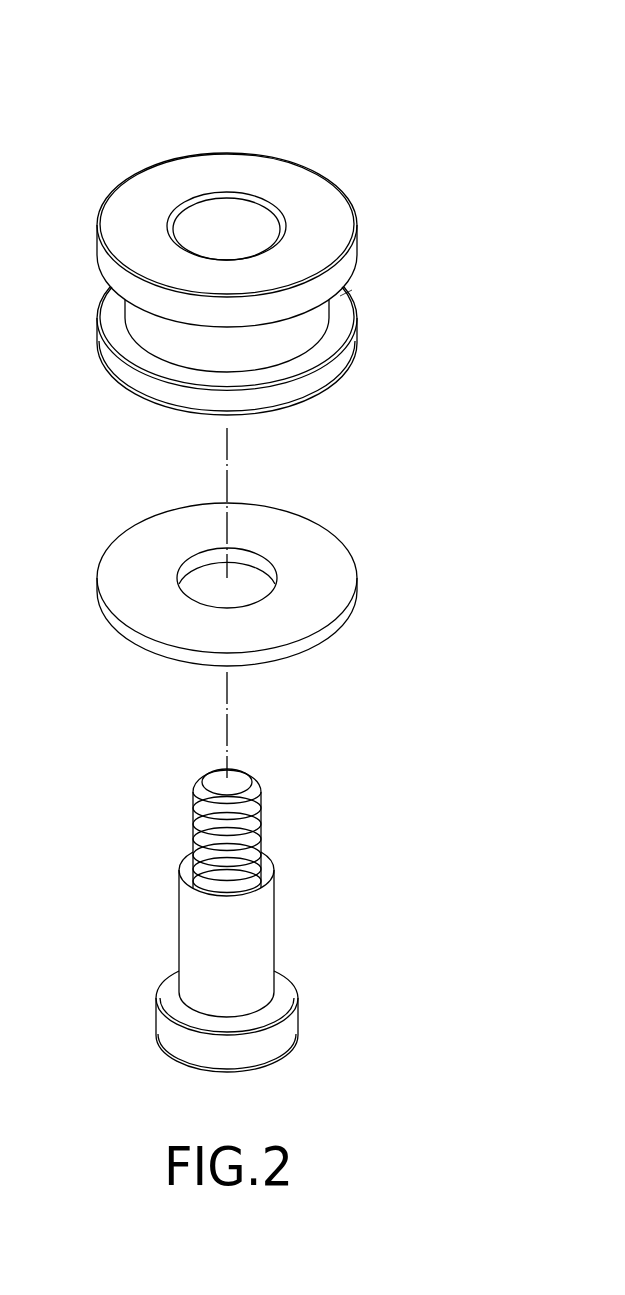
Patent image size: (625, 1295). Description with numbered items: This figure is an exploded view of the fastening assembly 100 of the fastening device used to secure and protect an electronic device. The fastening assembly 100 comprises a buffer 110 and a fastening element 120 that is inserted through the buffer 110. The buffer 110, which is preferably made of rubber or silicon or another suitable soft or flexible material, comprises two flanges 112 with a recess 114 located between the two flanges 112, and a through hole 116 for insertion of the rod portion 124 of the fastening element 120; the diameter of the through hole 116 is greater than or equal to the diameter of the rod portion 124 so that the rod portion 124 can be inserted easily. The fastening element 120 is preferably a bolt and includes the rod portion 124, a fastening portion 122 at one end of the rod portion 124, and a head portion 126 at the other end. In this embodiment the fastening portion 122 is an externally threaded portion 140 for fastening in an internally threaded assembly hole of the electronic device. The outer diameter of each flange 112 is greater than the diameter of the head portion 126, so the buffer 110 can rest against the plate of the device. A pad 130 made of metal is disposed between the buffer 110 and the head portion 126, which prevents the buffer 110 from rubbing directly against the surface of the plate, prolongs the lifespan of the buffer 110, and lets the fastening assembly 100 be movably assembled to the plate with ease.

The fastening assembly 100 is at (247, 32).
The buffer 110 is at (469, 177).
The flanges 112 is at (335, 368).
The recess 114 is at (345, 298).
The through hole 116 is at (262, 220).
The pad 130 is at (335, 562).
The fastening element 120 is at (422, 827).
The fastening portion 122 is at (262, 815).
The rod portion 124 is at (265, 928).
The head portion 126 is at (288, 1025).
The externally threaded portion 140 is at (207, 827).